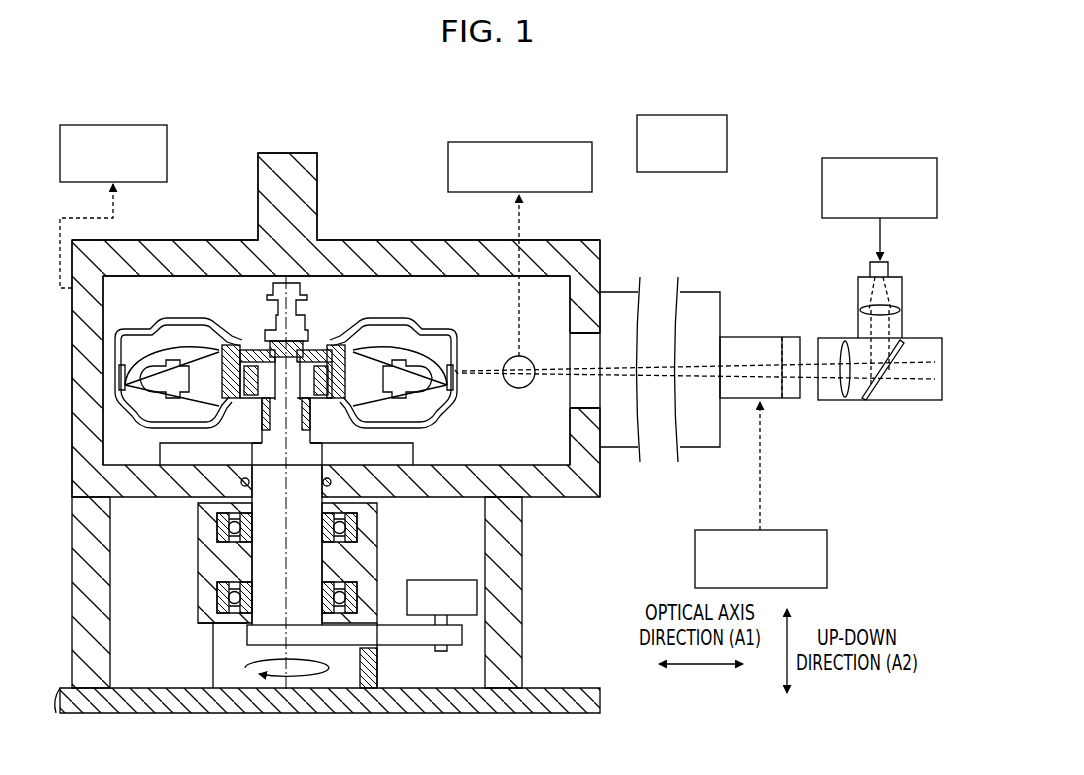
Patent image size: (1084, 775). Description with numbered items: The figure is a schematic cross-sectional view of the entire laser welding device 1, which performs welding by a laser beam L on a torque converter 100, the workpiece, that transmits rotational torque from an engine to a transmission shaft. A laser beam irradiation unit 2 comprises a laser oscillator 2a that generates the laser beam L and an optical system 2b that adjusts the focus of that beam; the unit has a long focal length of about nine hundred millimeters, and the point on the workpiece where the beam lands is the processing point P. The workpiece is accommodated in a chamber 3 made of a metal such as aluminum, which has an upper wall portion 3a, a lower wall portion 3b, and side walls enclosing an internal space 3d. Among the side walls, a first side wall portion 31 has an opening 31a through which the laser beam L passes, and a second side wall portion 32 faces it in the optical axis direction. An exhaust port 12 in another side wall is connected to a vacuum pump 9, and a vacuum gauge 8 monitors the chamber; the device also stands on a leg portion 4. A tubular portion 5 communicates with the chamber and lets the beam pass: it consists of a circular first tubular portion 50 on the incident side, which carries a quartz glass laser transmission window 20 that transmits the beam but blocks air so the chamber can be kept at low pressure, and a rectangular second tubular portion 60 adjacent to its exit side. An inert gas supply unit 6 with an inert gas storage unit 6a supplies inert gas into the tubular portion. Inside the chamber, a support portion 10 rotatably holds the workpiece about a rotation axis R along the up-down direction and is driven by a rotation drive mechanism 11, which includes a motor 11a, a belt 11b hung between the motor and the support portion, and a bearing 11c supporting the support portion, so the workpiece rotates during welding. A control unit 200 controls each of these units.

The laser welding device 1 is at (768, 137).
The laser beam irradiation unit 2 is at (864, 240).
The laser oscillator 2a is at (822, 176).
The optical system 2b is at (848, 300).
The chamber 3 is at (366, 222).
The upper wall portion 3a is at (413, 245).
The lower wall portion 3b is at (128, 488).
The internal space 3d is at (548, 290).
The leg portion 4 is at (518, 543).
The tubular portion 5 is at (711, 327).
The inert gas supply unit 6 is at (793, 495).
The inert gas storage unit 6a is at (827, 540).
The vacuum gauge 8 is at (167, 152).
The vacuum pump 9 is at (592, 160).
The support portion 10 is at (413, 452).
The rotation drive mechanism 11 is at (313, 595).
The motor 11a is at (425, 580).
The belt 11b is at (388, 623).
The bearing 11c is at (197, 580).
The exhaust port 12 is at (520, 388).
The laser transmission window 20 is at (795, 402).
The first side wall portion 31 is at (594, 458).
The opening 31a is at (585, 336).
The second side wall portion 32 is at (97, 325).
The first tubular portion 50 is at (778, 337).
The second tubular portion 60 is at (700, 290).
The torque converter 100 is at (397, 321).
The control unit 200 is at (727, 118).
The laser beam L is at (757, 360).
The processing point P is at (455, 374).
The rotation axis R is at (300, 352).